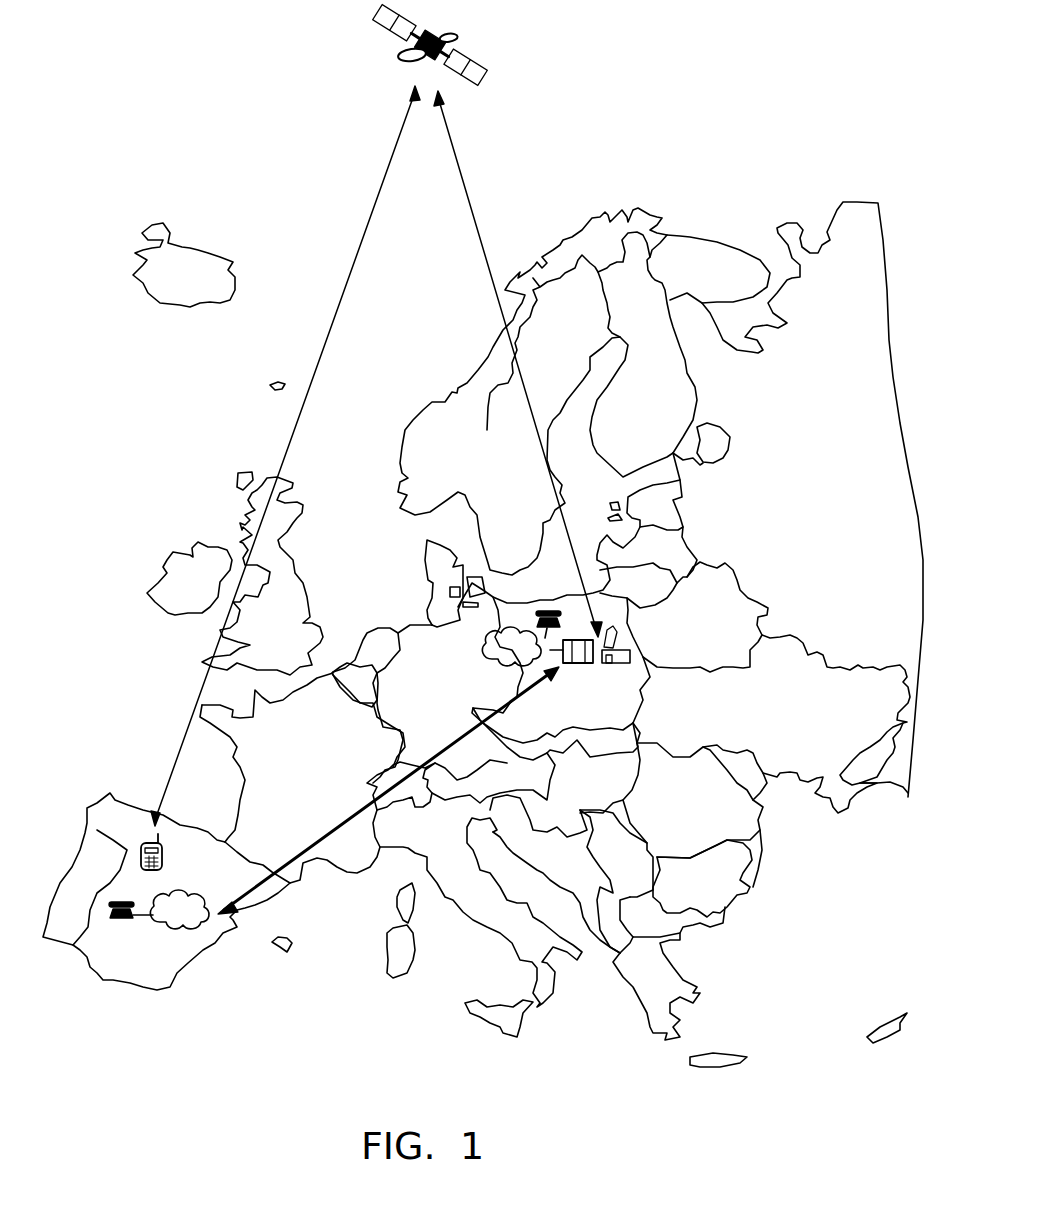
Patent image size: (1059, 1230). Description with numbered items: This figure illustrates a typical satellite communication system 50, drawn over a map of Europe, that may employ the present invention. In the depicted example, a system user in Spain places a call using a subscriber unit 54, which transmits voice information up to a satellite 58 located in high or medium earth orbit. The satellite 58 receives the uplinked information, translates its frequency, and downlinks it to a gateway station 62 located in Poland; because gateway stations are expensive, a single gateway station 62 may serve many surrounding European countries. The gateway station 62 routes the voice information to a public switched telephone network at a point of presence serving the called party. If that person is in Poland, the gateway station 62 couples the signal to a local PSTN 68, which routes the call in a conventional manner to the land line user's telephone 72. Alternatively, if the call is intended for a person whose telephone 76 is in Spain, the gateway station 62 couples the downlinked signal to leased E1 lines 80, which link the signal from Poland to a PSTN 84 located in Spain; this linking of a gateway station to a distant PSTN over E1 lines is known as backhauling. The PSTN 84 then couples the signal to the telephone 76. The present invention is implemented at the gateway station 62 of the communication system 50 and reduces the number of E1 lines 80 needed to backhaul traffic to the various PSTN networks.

The communication system 50 is at (152, 462).
The subscriber unit 54 is at (148, 840).
The satellite 58 is at (371, 15).
The gateway station 62 is at (632, 645).
The PSTN 68 is at (485, 650).
The telephone 72 is at (553, 610).
The telephone 76 is at (80, 950).
The E1 lines 80 is at (340, 845).
The PSTN 84 is at (193, 937).